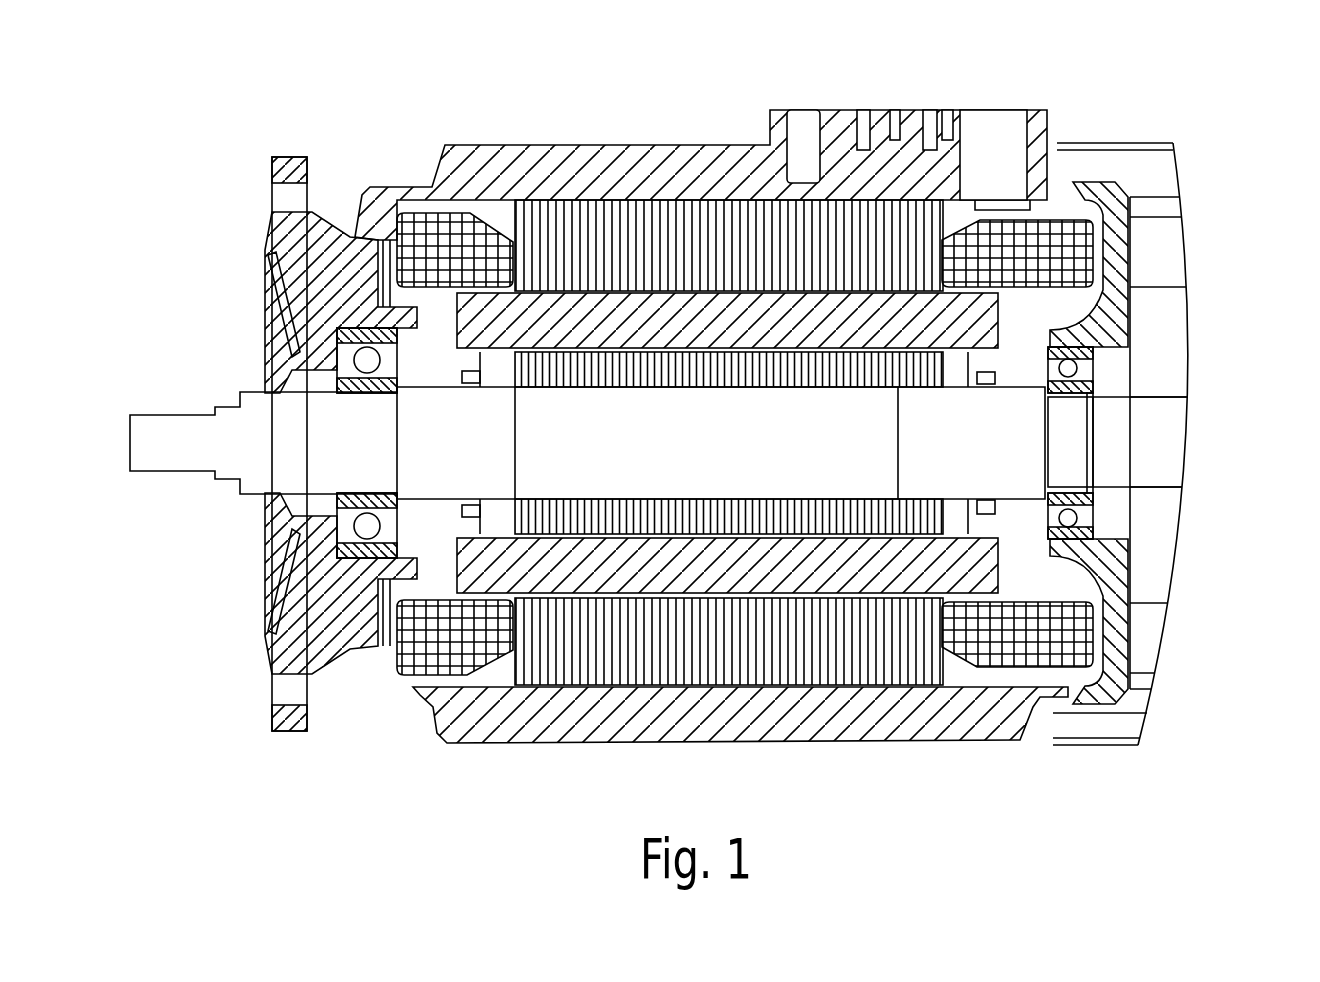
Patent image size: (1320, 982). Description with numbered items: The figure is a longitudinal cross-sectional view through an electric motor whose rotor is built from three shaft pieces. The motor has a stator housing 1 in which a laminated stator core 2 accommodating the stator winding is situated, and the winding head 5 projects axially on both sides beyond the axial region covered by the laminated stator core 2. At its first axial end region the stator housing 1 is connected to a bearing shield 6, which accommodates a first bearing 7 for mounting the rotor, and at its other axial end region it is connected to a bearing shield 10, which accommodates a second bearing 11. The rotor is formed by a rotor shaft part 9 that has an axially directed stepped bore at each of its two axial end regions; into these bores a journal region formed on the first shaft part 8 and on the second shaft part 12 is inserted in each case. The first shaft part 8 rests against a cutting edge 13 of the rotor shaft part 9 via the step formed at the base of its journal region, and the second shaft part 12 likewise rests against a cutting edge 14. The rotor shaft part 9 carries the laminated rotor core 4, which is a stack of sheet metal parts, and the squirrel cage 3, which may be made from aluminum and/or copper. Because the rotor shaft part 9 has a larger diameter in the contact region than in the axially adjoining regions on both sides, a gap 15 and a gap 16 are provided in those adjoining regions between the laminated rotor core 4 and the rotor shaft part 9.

The stator housing 1 is at (503, 167).
The laminated stator core 2 is at (618, 253).
The squirrel cage 3 is at (760, 337).
The laminated rotor core 4 is at (857, 372).
The winding head 5 is at (447, 252).
The bearing shield 6 is at (330, 265).
The first bearing 7 is at (368, 362).
The first shaft part 8 is at (268, 433).
The rotor shaft part 9 is at (752, 452).
The bearing shield 10 is at (1117, 293).
The second bearing 11 is at (1068, 368).
The second shaft part 12 is at (1135, 442).
The cutting edge 13 is at (387, 453).
The cutting edge 14 is at (1055, 468).
The gap 15 is at (925, 512).
The gap 16 is at (565, 508).